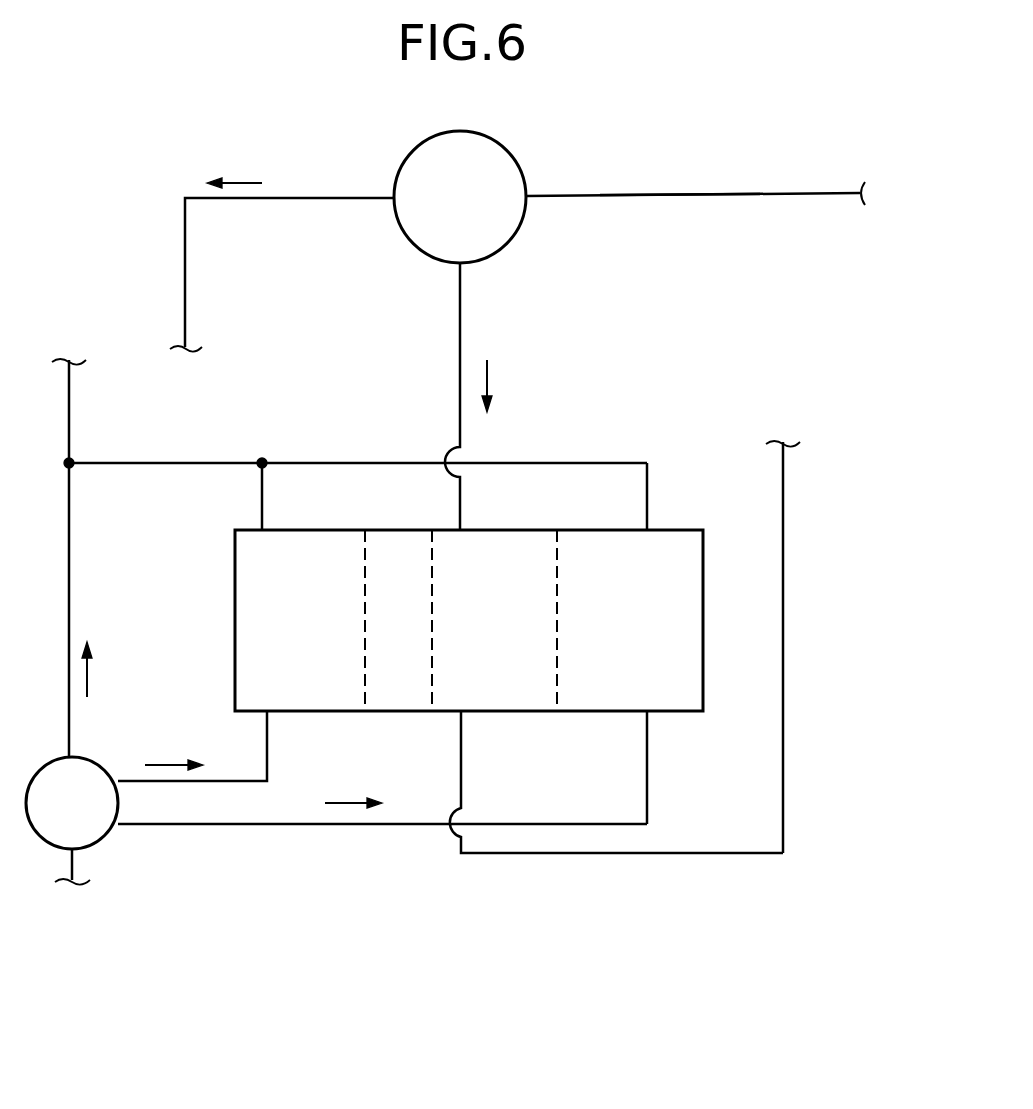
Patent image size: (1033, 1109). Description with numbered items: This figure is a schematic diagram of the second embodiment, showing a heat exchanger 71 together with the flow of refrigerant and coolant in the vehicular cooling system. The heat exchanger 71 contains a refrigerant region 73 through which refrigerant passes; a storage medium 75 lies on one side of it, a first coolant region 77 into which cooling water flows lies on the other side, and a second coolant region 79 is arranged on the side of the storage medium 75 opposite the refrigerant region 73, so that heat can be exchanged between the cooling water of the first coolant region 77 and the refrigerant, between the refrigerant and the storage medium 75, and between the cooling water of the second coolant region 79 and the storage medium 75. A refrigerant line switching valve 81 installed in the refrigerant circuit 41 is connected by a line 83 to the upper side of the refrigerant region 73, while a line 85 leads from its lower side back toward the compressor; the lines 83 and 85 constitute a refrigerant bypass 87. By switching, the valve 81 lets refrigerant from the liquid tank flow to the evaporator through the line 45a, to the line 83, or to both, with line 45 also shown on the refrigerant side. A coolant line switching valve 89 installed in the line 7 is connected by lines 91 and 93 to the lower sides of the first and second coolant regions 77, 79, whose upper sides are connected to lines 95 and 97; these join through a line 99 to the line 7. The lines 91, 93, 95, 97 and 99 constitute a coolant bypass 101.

The line 7 is at (69, 398).
The refrigerant circuit 41 is at (668, 193).
The pipe 45 is at (795, 196).
The line 45a is at (322, 198).
The heat exchanger 71 is at (686, 527).
The refrigerant region 73 is at (528, 547).
The storage medium 75 is at (411, 547).
The first coolant region 77 is at (603, 547).
The second coolant region 79 is at (303, 547).
The refrigerant line switching valve 81 is at (402, 232).
The line 83 is at (462, 325).
The line 85 is at (642, 855).
The refrigerant bypass 87 is at (455, 363).
The coolant line switching valve 89 is at (100, 835).
The line 91 is at (333, 826).
The line 93 is at (218, 781).
The line 95 is at (648, 488).
The line 97 is at (262, 492).
The line 99 is at (198, 463).
The coolant bypass 101 is at (303, 463).